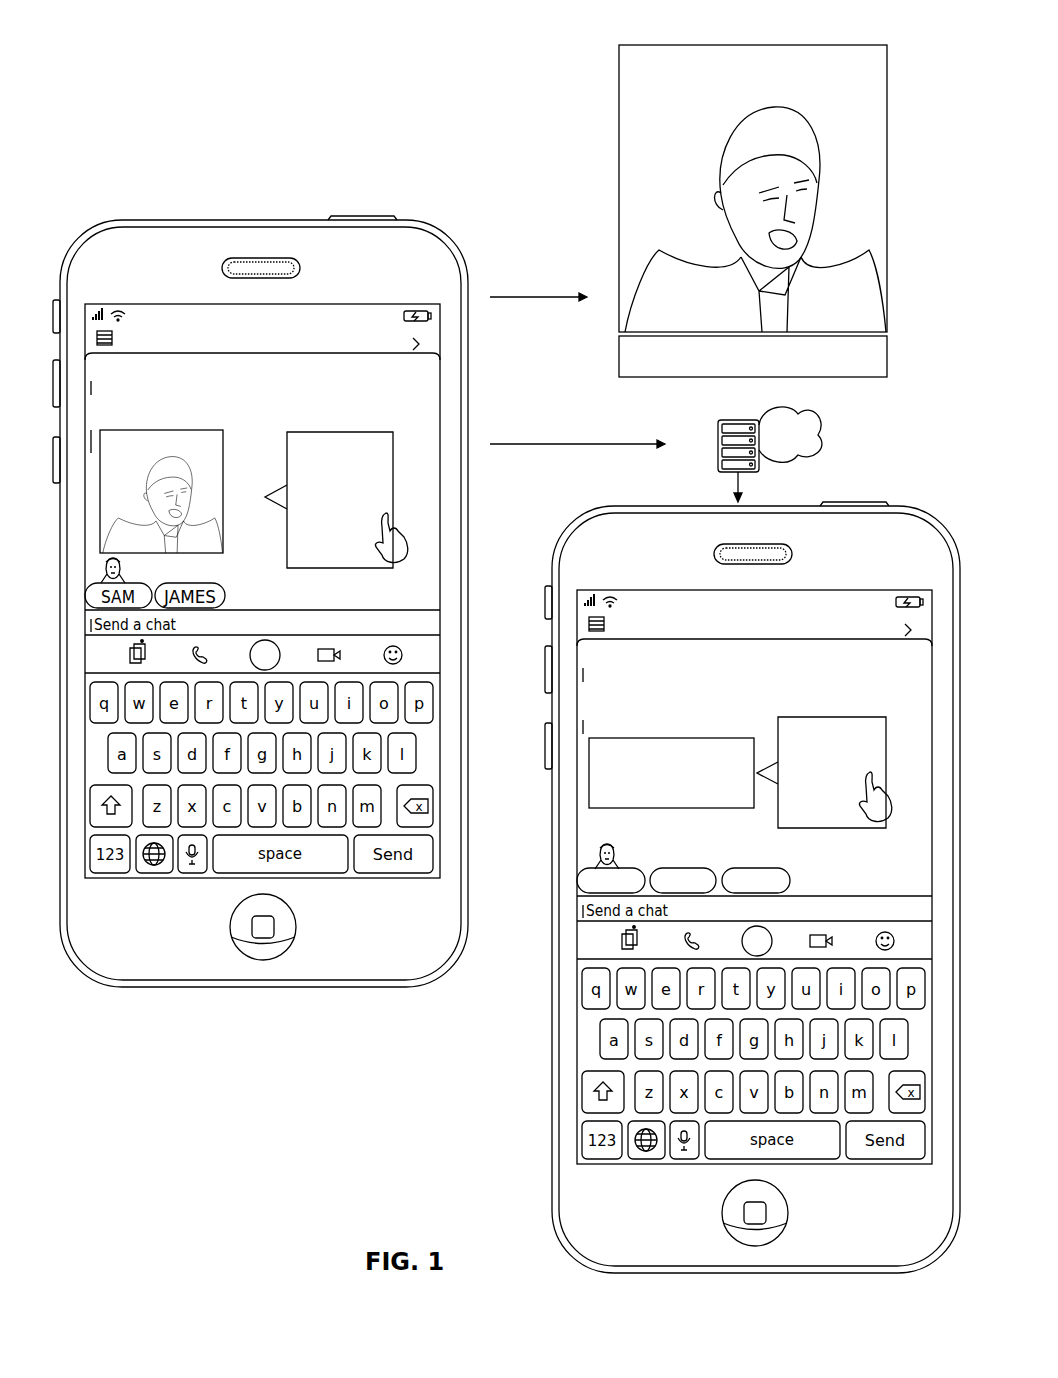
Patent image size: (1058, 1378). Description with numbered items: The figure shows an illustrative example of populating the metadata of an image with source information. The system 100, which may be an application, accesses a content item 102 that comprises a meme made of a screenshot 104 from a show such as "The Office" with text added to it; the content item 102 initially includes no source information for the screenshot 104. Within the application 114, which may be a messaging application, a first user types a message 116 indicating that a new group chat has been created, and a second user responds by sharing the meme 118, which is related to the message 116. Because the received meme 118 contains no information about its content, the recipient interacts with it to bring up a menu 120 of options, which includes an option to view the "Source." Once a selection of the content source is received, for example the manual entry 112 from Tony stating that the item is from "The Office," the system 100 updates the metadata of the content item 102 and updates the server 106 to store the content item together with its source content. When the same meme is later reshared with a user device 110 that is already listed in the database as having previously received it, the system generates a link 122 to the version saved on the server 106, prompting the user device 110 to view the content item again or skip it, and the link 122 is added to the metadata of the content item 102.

The system 100 is at (131, 47).
The content item 102 is at (618, 82).
The screenshot 104 is at (677, 200).
The server 106 is at (815, 444).
The user device 110 is at (893, 506).
The manual entry 112 is at (618, 356).
The application 114 is at (380, 334).
The message 116 is at (188, 375).
The meme 118 is at (230, 445).
The menu 120 is at (368, 448).
The link 122 is at (587, 782).